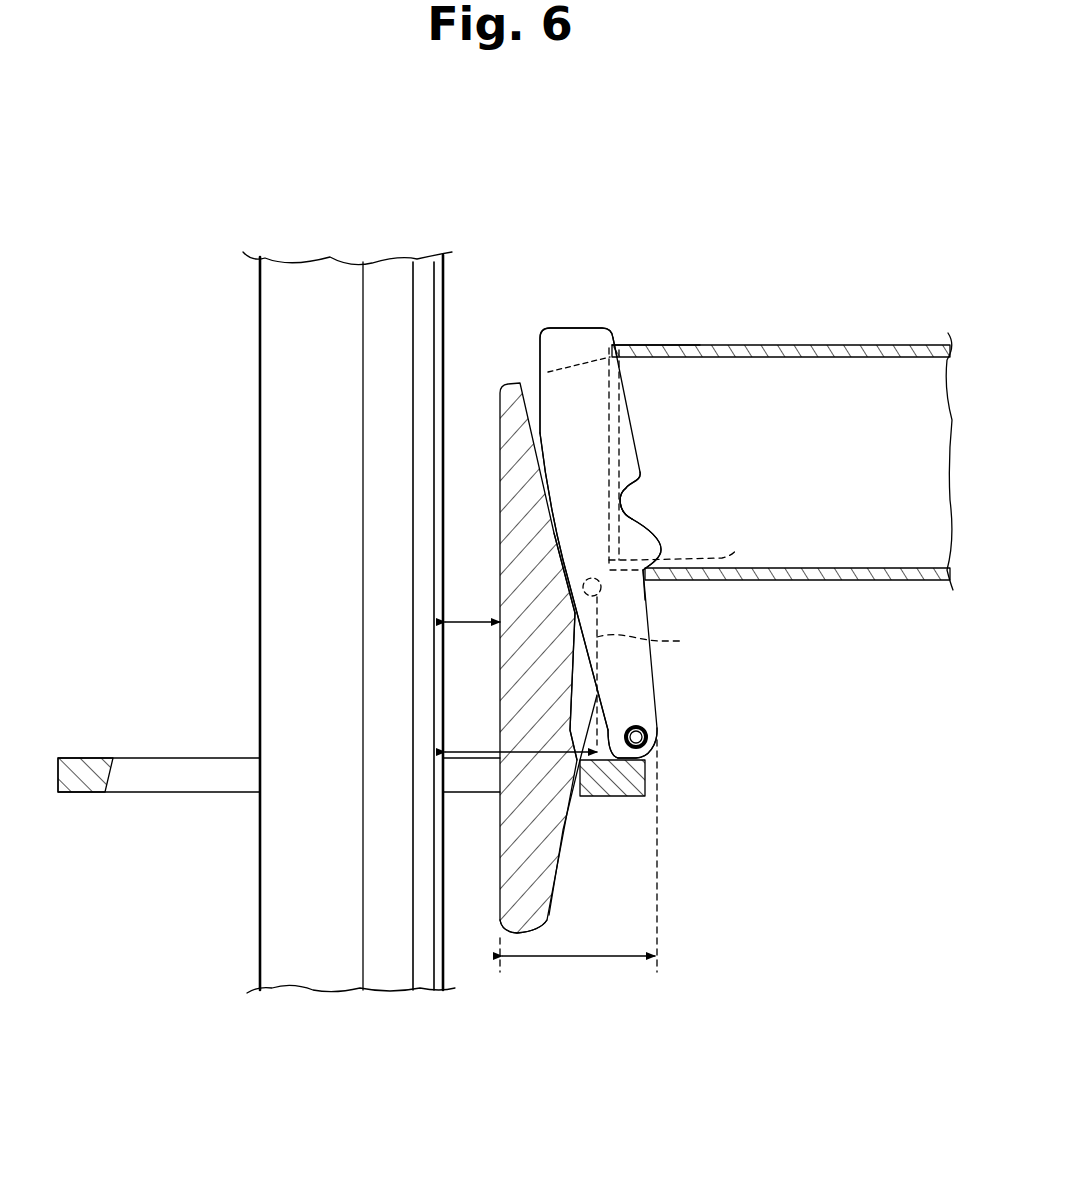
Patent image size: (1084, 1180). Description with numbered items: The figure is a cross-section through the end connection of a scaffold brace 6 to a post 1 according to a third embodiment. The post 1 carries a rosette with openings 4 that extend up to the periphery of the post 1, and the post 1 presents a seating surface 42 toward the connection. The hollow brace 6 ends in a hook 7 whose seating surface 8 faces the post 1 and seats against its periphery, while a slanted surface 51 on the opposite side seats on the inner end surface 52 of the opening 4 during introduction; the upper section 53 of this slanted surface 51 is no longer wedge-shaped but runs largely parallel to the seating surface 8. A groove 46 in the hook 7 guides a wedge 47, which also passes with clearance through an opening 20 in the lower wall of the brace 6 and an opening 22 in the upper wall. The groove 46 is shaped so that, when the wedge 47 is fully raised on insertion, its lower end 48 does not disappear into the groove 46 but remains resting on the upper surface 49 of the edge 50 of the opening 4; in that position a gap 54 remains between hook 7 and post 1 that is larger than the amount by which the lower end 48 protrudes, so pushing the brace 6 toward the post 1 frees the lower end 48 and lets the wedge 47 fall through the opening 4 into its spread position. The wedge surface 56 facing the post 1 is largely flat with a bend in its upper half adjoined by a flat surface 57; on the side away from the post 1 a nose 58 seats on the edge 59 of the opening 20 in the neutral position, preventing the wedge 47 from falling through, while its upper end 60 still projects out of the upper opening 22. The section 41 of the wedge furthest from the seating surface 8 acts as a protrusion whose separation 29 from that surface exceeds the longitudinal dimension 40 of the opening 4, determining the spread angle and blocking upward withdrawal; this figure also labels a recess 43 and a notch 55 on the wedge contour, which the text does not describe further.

The post 1 is at (313, 917).
The opening 4 is at (473, 780).
The brace 6 is at (800, 332).
The hook 7 is at (520, 890).
The seating surface 8 is at (494, 540).
The opening in lower wall 20 is at (683, 459).
The opening in upper wall 22 is at (620, 347).
The separation 29 is at (582, 958).
The longitudinal dimension of the opening 40 is at (493, 750).
The section furthest from the seating surface 41 is at (660, 732).
The seating surface of the post 42 is at (447, 333).
The recess 43 is at (629, 501).
The groove 46 is at (580, 703).
The wedge 47 is at (557, 347).
The lower end of the wedge 48 is at (652, 745).
The upper surface of the edge 49 is at (603, 733).
The edge of the opening 50 is at (630, 773).
The slanted surface 51 is at (563, 833).
The inner end surface of the opening 52 is at (583, 784).
The upper section of the slanted surface 53 is at (650, 661).
The gap 54 is at (472, 606).
The notch 55 is at (620, 513).
The surface facing the post 56 is at (583, 648).
The flat surface 57 is at (535, 392).
The nose 58 is at (643, 543).
The edge of the opening in the lower wall 59 is at (648, 585).
The upper end of the wedge 60 is at (563, 320).